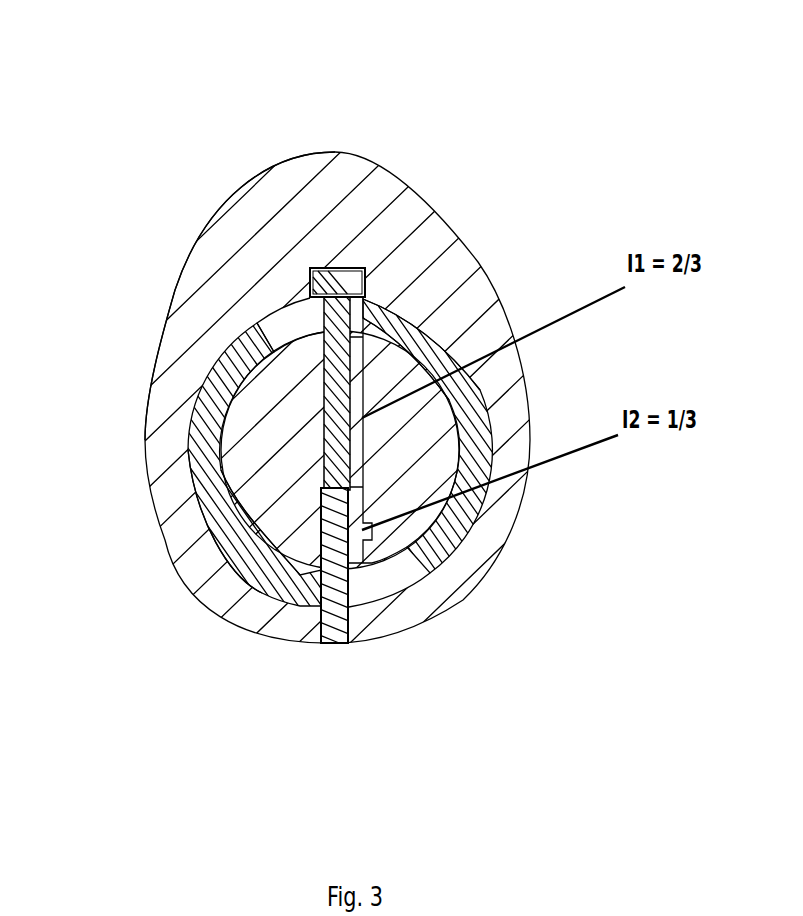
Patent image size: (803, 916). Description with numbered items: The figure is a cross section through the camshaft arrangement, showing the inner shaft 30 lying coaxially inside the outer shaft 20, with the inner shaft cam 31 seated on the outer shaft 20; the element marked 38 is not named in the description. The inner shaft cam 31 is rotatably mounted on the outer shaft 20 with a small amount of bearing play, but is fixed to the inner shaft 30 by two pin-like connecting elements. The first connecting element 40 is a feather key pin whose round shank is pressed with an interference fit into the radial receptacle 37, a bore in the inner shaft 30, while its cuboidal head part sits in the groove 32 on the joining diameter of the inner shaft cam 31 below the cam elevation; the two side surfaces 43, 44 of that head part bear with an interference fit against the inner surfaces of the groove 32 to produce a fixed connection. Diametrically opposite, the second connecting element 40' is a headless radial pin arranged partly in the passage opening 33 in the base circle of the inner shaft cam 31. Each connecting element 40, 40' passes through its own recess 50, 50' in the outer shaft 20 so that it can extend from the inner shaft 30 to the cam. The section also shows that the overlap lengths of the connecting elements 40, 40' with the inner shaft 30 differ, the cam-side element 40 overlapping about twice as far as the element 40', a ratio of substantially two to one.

The outer shaft 20 is at (148, 432).
The inner shaft 30 is at (505, 408).
The inner shaft cam 31 is at (482, 567).
The groove 32 is at (360, 270).
The passage opening 33 is at (318, 645).
The receptacle 37 is at (340, 450).
The outer housing 38 is at (332, 160).
The first connecting element 40 is at (232, 286).
The second connecting element 40' is at (223, 559).
The side surface 43 is at (385, 298).
The side surface 44 is at (288, 280).
The recess 50 is at (265, 233).
The recess 50' is at (409, 645).